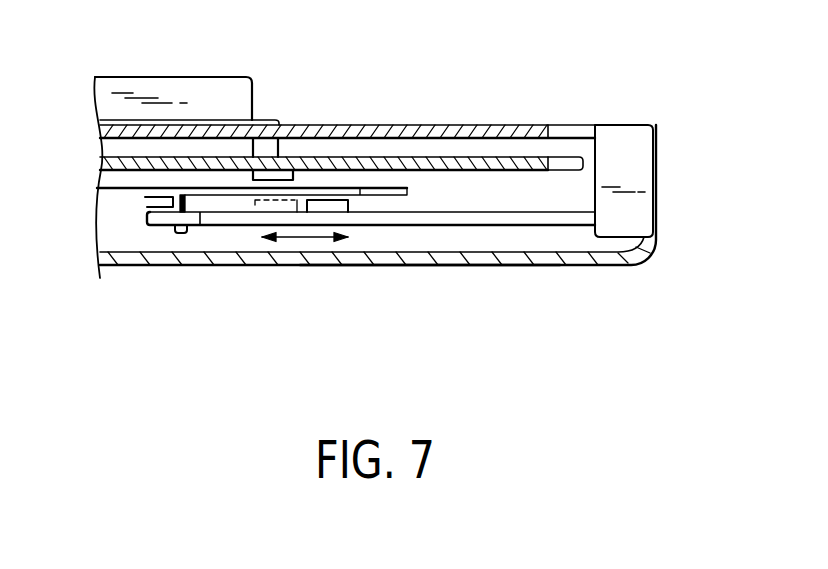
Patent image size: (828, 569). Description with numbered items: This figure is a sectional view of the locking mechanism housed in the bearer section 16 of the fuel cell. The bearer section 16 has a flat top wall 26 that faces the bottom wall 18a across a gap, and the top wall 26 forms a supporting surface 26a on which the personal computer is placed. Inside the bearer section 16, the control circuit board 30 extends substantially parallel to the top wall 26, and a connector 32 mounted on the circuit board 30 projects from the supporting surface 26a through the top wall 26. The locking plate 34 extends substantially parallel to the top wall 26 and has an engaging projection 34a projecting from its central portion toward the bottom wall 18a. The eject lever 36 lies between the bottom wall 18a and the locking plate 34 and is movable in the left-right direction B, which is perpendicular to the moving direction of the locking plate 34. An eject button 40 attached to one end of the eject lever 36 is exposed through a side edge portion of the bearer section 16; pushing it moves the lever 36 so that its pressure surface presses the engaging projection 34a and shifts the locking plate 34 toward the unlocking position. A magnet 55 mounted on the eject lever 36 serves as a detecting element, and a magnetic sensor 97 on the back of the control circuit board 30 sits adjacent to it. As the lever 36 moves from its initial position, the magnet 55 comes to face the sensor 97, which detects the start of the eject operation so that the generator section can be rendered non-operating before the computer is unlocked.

The bearer section 16 is at (349, 280).
The bottom wall 18a is at (468, 266).
The top wall 26 is at (459, 125).
The supporting surface 26a is at (370, 125).
The control circuit board 30 is at (517, 157).
The connector 32 is at (203, 90).
The locking plate 34 is at (117, 197).
The engaging projection 34a is at (182, 233).
The eject lever 36 is at (533, 226).
The eject button 40 is at (642, 165).
The magnet 55 is at (342, 207).
The magnetic sensor 97 is at (283, 173).
The left-right direction B is at (297, 238).